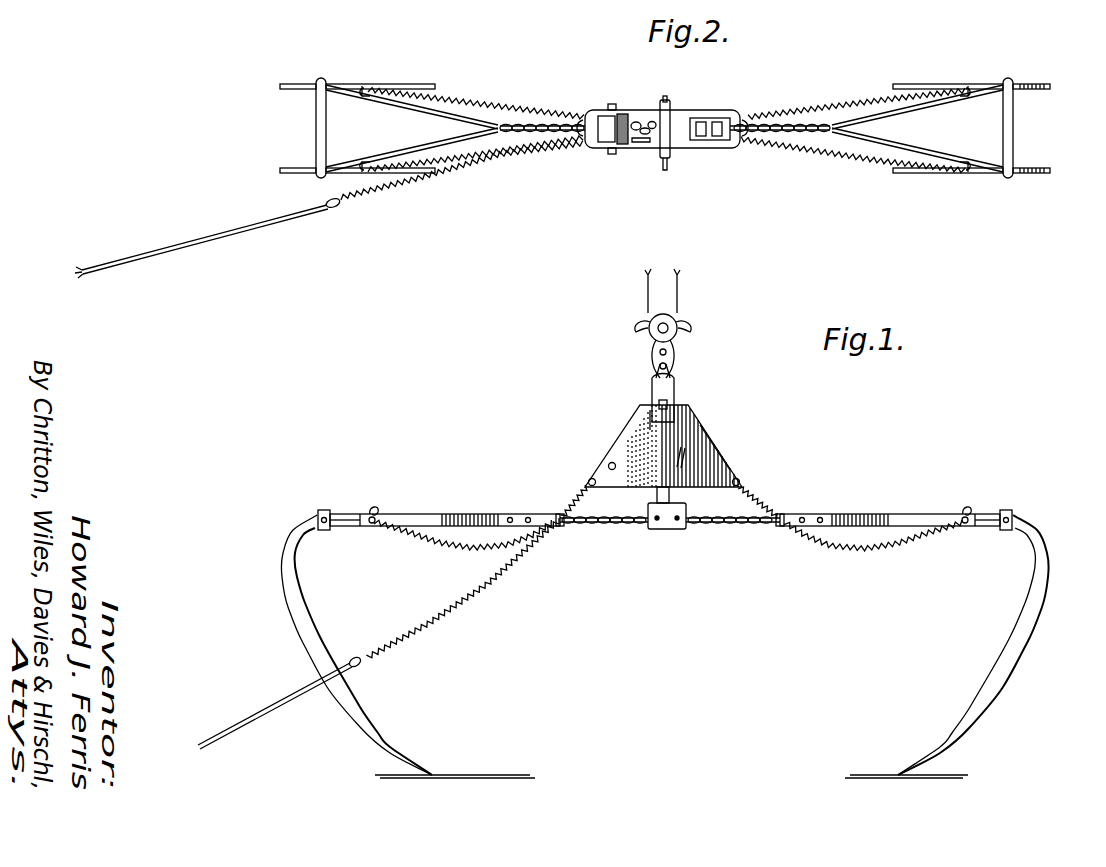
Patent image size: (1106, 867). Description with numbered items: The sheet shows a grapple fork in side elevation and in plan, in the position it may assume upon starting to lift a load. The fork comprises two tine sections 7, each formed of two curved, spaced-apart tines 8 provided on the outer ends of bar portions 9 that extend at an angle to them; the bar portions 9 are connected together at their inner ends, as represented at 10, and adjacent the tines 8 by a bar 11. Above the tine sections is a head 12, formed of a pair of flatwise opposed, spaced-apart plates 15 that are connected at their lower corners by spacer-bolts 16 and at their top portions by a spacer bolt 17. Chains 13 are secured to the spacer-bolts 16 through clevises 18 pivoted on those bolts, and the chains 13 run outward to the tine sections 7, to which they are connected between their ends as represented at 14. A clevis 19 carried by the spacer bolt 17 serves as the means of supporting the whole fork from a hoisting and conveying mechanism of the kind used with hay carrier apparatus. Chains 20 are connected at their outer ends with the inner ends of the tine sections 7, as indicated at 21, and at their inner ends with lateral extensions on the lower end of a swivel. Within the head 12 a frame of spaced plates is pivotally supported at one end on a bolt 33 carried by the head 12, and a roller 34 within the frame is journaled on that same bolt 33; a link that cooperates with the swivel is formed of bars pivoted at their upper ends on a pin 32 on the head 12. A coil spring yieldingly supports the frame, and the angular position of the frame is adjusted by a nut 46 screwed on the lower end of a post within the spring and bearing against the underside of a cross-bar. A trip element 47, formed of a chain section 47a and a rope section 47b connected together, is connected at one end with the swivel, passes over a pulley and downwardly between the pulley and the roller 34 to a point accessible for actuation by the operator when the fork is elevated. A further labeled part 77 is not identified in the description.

In FIG. 1, the tine section 7 is at (349, 534).
In FIG. 2, the tine 8 is at (424, 84).
In FIG. 1, the tine 8 is at (285, 609).
In FIG. 2, the bar portion 9 is at (436, 110).
In FIG. 1, the bar portion 9 is at (456, 513).
In FIG. 2, the inner end connection 10 is at (531, 126).
In FIG. 1, the inner end connection 10 is at (516, 513).
In FIG. 2, the bar 11 is at (326, 128).
In FIG. 1, the bar 11 is at (323, 510).
In FIG. 1, the head 12 is at (708, 432).
In FIG. 2, the chain 13 is at (476, 96).
In FIG. 1, the chain 13 is at (450, 550).
In FIG. 2, the chain connection 14 is at (367, 87).
In FIG. 1, the chain connection 14 is at (372, 512).
In FIG. 1, the plate 15 is at (727, 458).
In FIG. 2, the spacer-bolt 16 is at (592, 112).
In FIG. 1, the spacer-bolt 16 is at (589, 480).
In FIG. 1, the spacer bolt 17 is at (656, 423).
In FIG. 2, the clevis 18 is at (583, 120).
In FIG. 2, the clevis 19 is at (672, 118).
In FIG. 1, the clevis 19 is at (678, 395).
In FIG. 2, the chain 20 is at (720, 136).
In FIG. 1, the chain 20 is at (606, 526).
In FIG. 1, the chain connection 21 is at (560, 530).
In FIG. 1, the pin 32 is at (680, 449).
In FIG. 2, the bolt 33 is at (622, 146).
In FIG. 1, the bolt 33 is at (611, 462).
In FIG. 2, the roller 34 is at (606, 134).
In FIG. 2, the nut 46 is at (644, 142).
In FIG. 2, the trip element 47 is at (632, 122).
In FIG. 1, the trip element 47 is at (426, 624).
In FIG. 2, the chain section 47a is at (402, 186).
In FIG. 1, the chain section 47a is at (489, 584).
In FIG. 2, the rope section 47b is at (190, 246).
In FIG. 1, the rope section 47b is at (257, 718).
In FIG. 2, the pin 77 is at (666, 170).